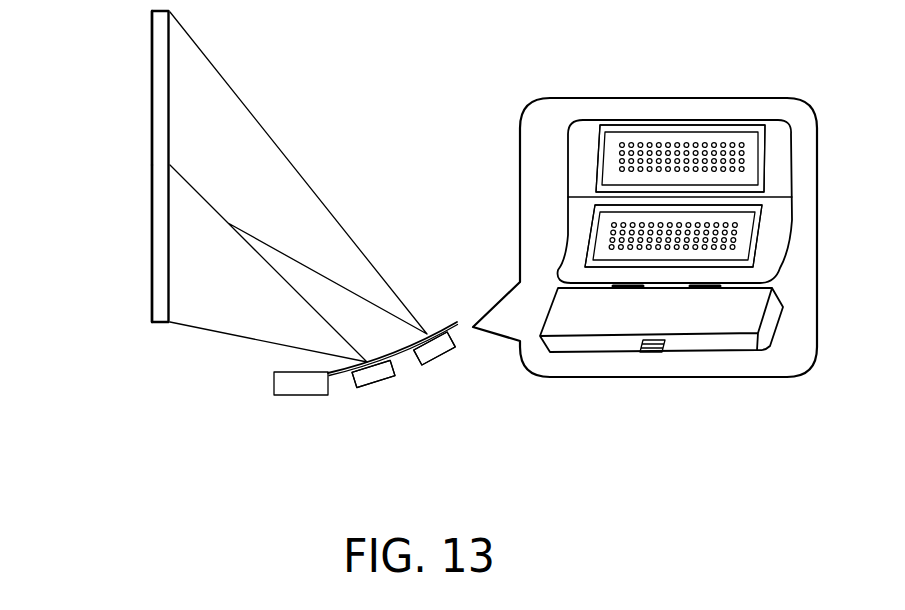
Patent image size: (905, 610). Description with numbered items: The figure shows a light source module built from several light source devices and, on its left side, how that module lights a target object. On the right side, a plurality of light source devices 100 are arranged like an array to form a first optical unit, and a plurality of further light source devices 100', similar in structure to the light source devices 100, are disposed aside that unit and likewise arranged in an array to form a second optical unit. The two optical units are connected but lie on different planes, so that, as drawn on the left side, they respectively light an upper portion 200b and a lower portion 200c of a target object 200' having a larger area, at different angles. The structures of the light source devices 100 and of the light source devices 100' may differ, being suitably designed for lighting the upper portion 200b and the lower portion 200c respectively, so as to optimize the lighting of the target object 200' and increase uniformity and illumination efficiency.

The light source device 100 is at (606, 142).
The light source device 100' is at (605, 228).
The target object 200' is at (93, 166).
The upper portion 200b is at (141, 10).
The lower portion 200c is at (141, 165).